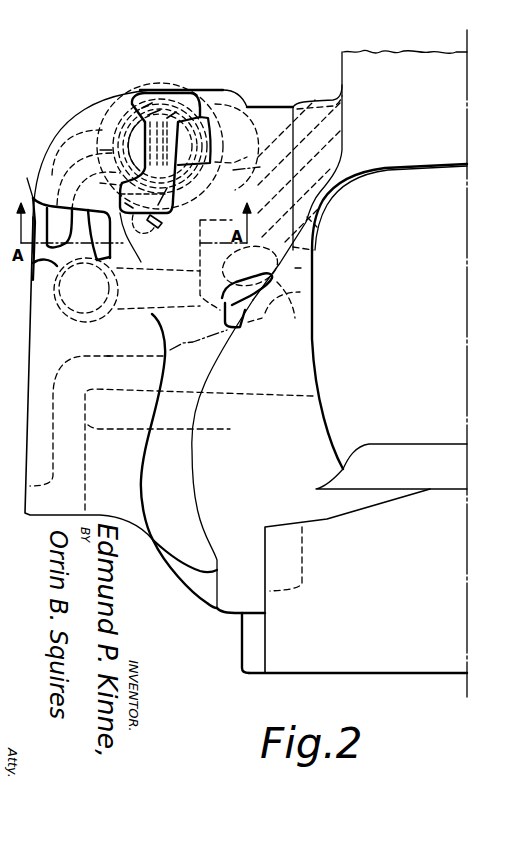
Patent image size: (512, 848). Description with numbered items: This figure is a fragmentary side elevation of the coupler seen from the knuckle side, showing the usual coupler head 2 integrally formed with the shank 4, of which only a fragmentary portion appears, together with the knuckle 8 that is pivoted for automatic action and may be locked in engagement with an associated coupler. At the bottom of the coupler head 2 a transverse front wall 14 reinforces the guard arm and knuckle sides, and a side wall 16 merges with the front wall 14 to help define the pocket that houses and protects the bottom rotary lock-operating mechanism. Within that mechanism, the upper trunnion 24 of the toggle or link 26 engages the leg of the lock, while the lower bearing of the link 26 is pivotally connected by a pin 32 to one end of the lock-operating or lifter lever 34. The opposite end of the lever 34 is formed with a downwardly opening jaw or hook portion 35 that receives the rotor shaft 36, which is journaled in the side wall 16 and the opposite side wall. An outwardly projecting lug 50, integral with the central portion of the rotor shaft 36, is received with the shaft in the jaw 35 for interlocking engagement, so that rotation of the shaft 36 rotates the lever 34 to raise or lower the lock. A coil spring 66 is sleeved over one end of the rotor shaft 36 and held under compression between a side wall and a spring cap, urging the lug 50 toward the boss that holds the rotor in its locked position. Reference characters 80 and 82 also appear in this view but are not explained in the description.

The coupler head 2 is at (172, 583).
The shank 4 is at (406, 63).
The knuckle 8 is at (365, 667).
The front wall 14 is at (107, 365).
The side wall 16 is at (84, 109).
The upper trunnion 24 is at (298, 281).
The toggle or link 26 is at (157, 276).
The pin 32 is at (100, 306).
The lock-operating or lifter lever 34 is at (50, 151).
The jaw or hook portion 35 is at (67, 122).
The rotor shaft 36 is at (127, 122).
The lug 50 is at (117, 112).
The coil spring 66 is at (223, 90).
The pin 80 is at (151, 239).
The opening 82 is at (75, 290).